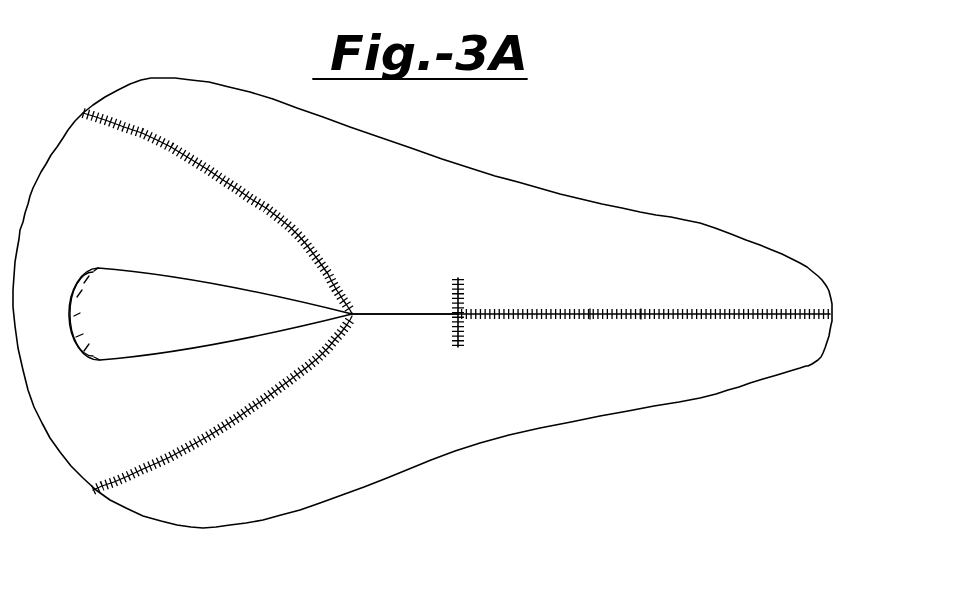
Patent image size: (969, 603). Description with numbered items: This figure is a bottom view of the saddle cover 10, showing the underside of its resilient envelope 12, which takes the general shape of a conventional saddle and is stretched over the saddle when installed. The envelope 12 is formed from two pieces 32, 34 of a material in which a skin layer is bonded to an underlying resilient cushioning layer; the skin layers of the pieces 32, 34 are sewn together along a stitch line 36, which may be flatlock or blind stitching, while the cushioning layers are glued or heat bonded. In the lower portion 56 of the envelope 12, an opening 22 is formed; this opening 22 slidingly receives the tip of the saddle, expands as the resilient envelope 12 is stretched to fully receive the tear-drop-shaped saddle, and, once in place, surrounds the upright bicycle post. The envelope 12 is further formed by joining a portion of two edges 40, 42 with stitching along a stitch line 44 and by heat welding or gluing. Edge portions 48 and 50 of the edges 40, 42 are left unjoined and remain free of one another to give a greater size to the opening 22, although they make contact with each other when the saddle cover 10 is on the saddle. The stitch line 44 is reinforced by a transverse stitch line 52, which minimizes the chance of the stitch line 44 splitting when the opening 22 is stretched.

The saddle cover 10 is at (606, 177).
The envelope 12 is at (388, 478).
The opening 22 is at (141, 327).
The piece of material 32 is at (82, 222).
The piece of material 34 is at (416, 221).
The stitch line 36 is at (155, 467).
The edge 40 is at (583, 310).
The edge 42 is at (642, 318).
The stitch line 44 is at (605, 320).
The edge portion 48 is at (408, 311).
The edge portion 50 is at (390, 316).
The transverse stitch line 52 is at (452, 340).
The lower portion 56 is at (251, 476).